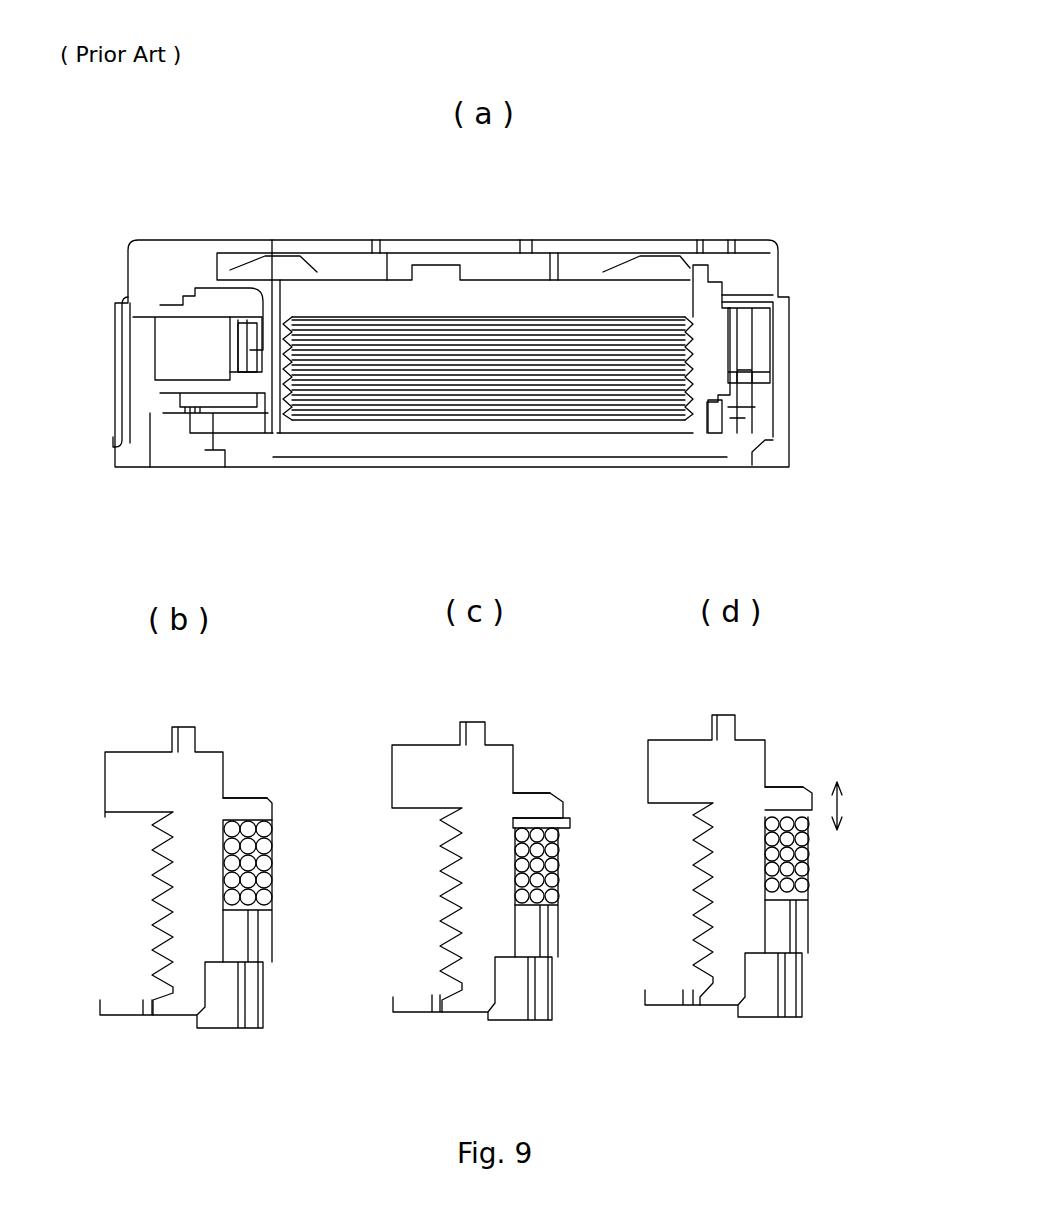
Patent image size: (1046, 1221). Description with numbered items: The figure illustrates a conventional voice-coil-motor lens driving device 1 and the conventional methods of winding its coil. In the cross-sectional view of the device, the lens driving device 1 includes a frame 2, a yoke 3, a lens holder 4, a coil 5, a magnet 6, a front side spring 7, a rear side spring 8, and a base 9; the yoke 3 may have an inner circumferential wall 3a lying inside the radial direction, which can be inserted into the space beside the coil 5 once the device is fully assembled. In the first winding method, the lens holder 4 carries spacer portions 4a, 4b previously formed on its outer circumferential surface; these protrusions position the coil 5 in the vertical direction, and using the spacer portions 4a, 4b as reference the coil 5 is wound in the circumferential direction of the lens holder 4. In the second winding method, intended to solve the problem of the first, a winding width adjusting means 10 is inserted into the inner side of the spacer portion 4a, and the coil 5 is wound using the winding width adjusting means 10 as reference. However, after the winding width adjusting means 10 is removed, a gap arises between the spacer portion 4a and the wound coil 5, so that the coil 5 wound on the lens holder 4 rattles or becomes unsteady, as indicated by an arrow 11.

The lens driving device 1 is at (244, 210).
The frame 2 is at (157, 250).
The yoke 3 is at (767, 293).
The inner circumferential wall 3a is at (262, 317).
The lens holder 4 is at (715, 288).
The spacer portion 4a is at (238, 810).
The spacer portion 4b is at (238, 947).
The coil 5 is at (737, 348).
The magnet 6 is at (170, 332).
The front side spring 7 is at (260, 282).
The rear side spring 8 is at (235, 407).
The base 9 is at (728, 443).
The winding width adjusting means 10 is at (563, 817).
The arrow 11 is at (838, 803).